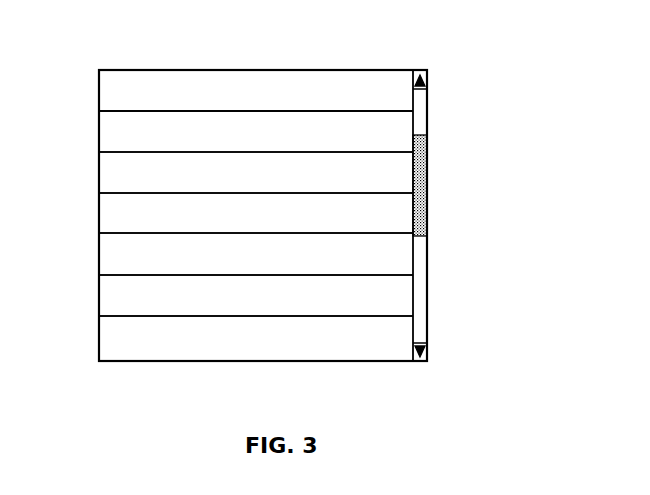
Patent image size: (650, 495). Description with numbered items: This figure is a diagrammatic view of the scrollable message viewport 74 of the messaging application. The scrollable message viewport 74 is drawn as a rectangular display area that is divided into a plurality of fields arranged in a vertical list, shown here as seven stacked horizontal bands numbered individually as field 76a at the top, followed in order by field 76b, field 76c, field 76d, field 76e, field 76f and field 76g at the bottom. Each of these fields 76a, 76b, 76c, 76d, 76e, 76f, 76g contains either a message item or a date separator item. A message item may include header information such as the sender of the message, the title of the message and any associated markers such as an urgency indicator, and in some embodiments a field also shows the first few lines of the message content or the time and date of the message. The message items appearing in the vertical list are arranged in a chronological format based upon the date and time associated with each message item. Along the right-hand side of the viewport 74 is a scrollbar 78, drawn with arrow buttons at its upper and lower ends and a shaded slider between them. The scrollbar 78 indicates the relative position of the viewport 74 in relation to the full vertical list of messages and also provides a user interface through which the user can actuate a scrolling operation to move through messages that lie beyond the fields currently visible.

The scrollable message viewport 74 is at (475, 110).
The field 76a is at (153, 93).
The field 76b is at (113, 130).
The field 76c is at (110, 177).
The field 76d is at (108, 216).
The field 76e is at (112, 260).
The field 76f is at (113, 306).
The field 76g is at (152, 343).
The scrollbar 78 is at (428, 168).